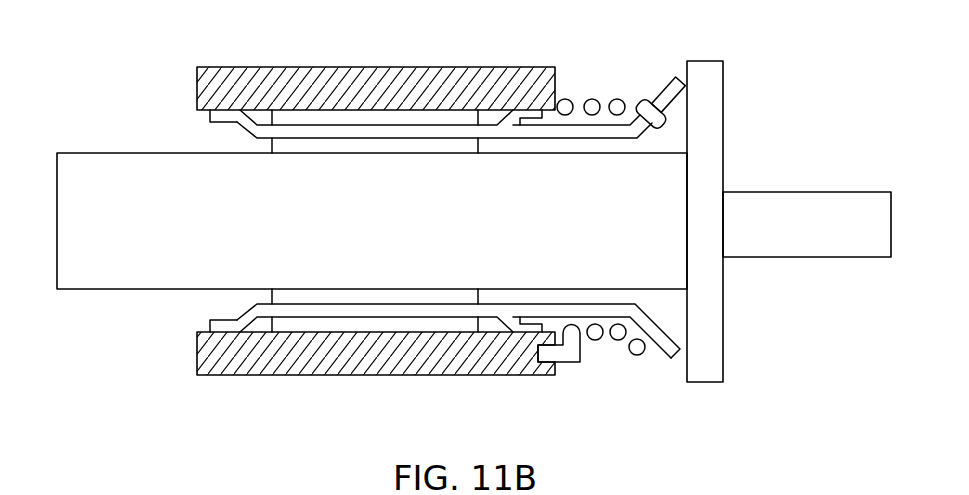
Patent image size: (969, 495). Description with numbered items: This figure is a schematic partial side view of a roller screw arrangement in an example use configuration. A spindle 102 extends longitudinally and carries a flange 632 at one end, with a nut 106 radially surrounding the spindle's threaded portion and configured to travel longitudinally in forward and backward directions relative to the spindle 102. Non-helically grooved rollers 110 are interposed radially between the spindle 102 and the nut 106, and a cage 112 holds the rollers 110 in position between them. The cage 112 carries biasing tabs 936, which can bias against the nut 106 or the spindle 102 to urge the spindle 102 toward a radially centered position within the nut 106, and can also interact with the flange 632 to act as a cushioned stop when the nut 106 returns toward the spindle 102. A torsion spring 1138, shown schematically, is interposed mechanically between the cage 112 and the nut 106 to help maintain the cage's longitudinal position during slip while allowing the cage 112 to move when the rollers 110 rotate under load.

The spindle 102 is at (395, 232).
The nut 106 is at (437, 67).
The roller 110 is at (303, 147).
The cage 112 is at (382, 128).
The flange 632 is at (713, 298).
The biasing tab 936 is at (210, 117).
The torsion spring 1138 is at (637, 380).